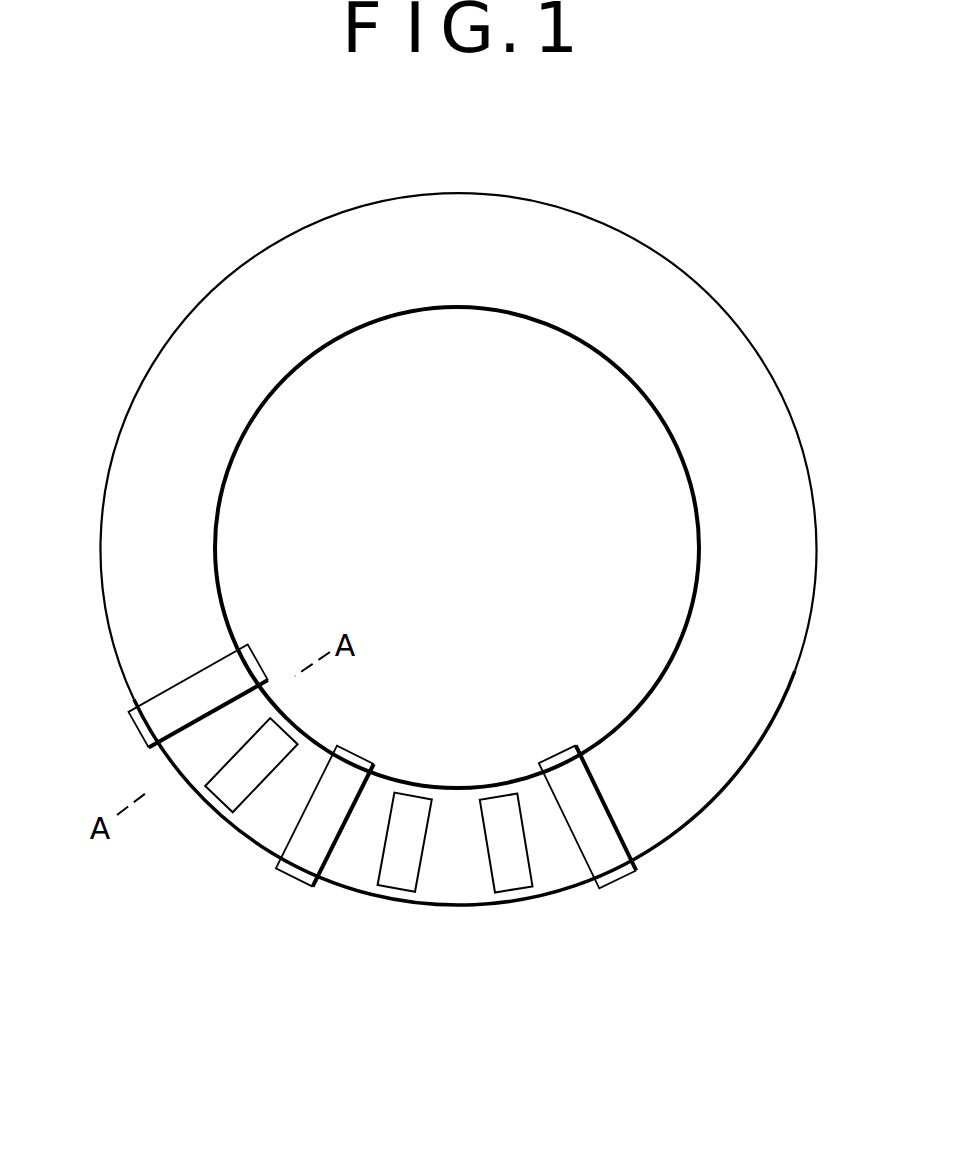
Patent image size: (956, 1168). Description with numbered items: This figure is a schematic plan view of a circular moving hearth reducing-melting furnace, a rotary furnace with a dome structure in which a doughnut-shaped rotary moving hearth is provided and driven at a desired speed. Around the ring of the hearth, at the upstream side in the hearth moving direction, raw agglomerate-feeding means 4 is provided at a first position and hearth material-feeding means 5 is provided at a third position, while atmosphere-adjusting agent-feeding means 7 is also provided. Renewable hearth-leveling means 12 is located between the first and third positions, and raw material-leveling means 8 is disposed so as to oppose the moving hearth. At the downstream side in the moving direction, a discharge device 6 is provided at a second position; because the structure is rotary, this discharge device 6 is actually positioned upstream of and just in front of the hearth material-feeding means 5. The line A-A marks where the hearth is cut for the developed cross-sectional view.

The raw agglomerate-feeding means 4 is at (512, 868).
The hearth material-feeding means 5 is at (232, 785).
The discharge device 6 is at (160, 717).
The atmosphere-adjusting agent-feeding means 7 is at (398, 872).
The raw material-leveling means 8 is at (597, 843).
The renewable hearth-leveling means 12 is at (303, 853).